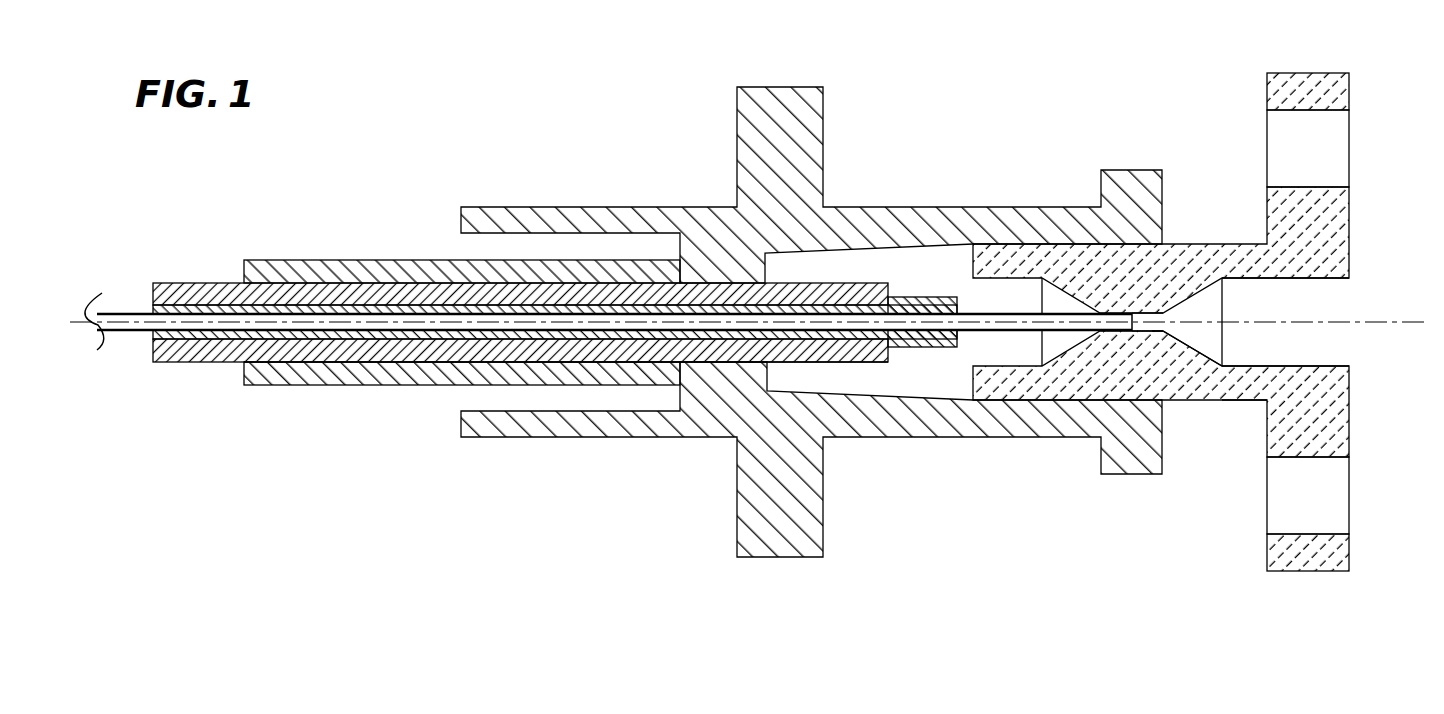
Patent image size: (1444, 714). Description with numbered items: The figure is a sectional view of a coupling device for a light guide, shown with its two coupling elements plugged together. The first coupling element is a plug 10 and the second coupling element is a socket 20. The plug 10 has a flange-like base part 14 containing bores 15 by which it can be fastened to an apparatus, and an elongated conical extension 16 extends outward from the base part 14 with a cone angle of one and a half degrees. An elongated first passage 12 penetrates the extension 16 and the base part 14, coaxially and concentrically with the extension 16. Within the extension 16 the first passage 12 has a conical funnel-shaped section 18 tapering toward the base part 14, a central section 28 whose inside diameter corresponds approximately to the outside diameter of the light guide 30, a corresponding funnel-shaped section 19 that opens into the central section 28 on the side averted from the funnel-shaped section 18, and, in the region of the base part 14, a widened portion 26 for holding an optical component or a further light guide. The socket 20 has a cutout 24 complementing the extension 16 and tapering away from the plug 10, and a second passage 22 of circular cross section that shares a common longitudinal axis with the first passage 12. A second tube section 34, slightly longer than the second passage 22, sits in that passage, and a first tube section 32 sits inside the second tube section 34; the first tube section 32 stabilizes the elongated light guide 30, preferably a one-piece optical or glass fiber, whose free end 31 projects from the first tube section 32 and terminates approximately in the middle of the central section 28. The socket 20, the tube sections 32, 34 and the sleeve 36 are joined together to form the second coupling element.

The plug 10 is at (1248, 406).
The first passage 12 is at (1157, 313).
The base part 14 is at (1297, 575).
The bores 15 is at (1327, 150).
The extension 16 is at (1073, 262).
The funnel-shaped section 18 is at (1063, 343).
The funnel-shaped section 19 is at (1213, 343).
The socket 20 is at (700, 418).
The second passage 22 is at (412, 283).
The cutout 24 is at (900, 373).
The widened portion 26 is at (1313, 308).
The central section 28 is at (1140, 310).
The light guide 30 is at (128, 335).
The free end 31 is at (1152, 333).
The first tube section 32 is at (208, 345).
The second tube section 34 is at (313, 353).
The sleeve 36 is at (915, 300).